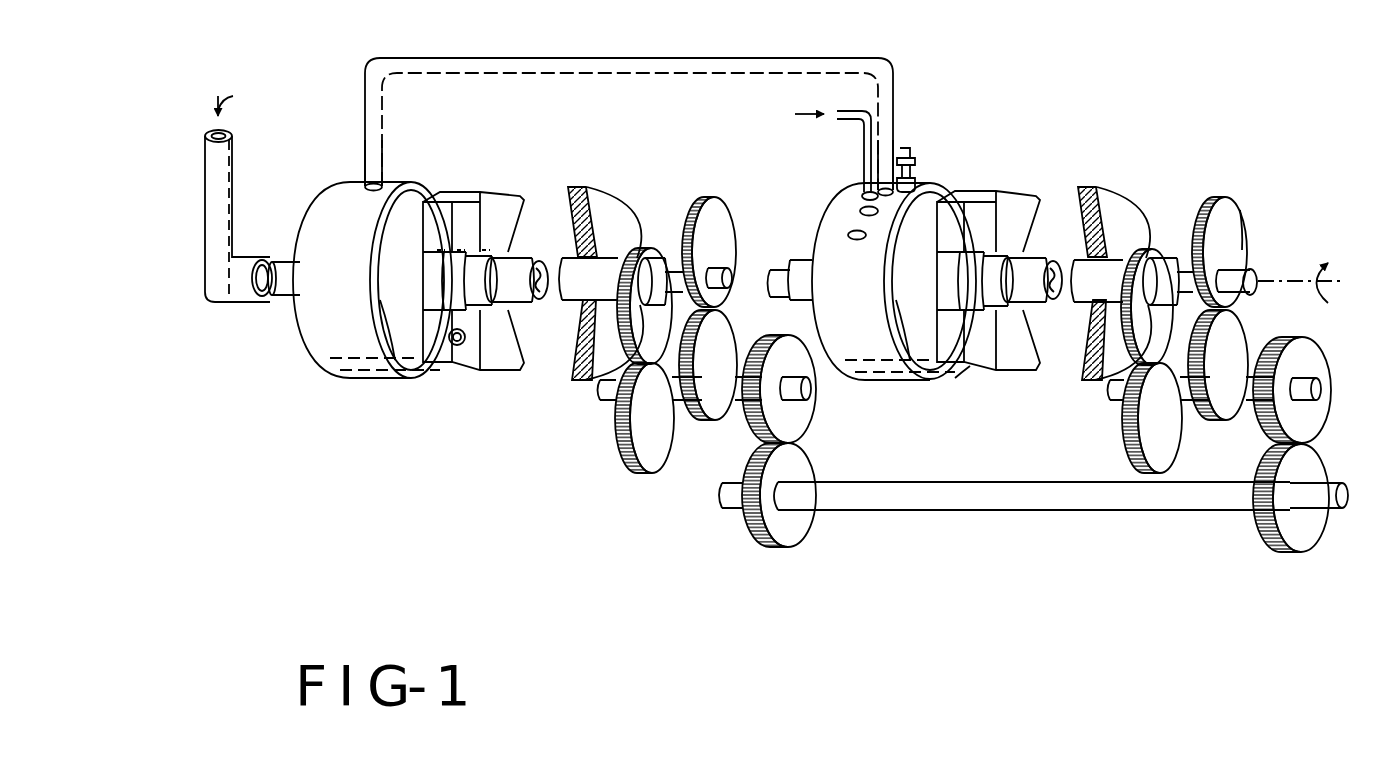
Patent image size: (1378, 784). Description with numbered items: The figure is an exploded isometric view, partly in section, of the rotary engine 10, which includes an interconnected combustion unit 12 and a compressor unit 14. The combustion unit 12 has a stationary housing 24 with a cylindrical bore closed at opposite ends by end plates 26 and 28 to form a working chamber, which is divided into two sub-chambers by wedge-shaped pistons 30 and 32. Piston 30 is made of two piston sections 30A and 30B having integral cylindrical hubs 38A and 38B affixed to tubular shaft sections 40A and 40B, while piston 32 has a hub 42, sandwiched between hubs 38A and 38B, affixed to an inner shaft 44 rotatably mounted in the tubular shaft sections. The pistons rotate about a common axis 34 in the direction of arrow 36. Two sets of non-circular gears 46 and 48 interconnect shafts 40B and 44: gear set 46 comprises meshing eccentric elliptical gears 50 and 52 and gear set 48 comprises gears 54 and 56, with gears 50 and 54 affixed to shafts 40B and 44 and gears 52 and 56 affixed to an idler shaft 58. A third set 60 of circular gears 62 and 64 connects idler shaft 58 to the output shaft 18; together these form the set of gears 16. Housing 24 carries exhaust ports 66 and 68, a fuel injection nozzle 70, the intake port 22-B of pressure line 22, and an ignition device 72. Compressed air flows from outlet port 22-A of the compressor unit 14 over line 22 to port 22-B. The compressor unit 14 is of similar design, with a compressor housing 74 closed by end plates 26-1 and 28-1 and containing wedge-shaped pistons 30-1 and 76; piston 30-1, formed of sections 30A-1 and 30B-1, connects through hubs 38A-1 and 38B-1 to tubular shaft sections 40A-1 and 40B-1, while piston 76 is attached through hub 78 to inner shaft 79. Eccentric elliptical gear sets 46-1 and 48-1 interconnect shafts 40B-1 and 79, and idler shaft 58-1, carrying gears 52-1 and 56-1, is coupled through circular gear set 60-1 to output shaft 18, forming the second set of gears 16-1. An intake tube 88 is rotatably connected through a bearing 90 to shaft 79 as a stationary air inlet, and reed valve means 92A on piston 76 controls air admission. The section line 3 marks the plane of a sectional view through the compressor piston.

The engine 10 is at (743, 44).
The combustion unit 12 is at (1036, 74).
The compressor unit 14 is at (293, 72).
The set of gears 16 is at (1245, 120).
The set of gears 16-1 is at (676, 520).
The output shaft 18 is at (985, 512).
The pressure line 22 is at (590, 58).
The outlet port 22-A is at (372, 180).
The intake port 22-B is at (885, 186).
The housing 24 is at (848, 382).
The end plate 26 is at (903, 340).
The end plate 26-1 is at (388, 322).
The end plate 28 is at (1080, 362).
The end plate 28-1 is at (598, 190).
The piston 30 is at (993, 180).
The piston 30-1 is at (488, 188).
The piston section 30A is at (990, 190).
The piston section 30A-1 is at (440, 190).
The piston section 30B is at (1025, 198).
The piston section 30B-1 is at (500, 200).
The piston 32 is at (975, 370).
The common axis 34 is at (1272, 284).
The arrow 36 is at (1326, 303).
The cylindrical hub 38A is at (940, 276).
The cylindrical hub 38A-1 is at (425, 264).
The cylindrical hub 38B is at (986, 298).
The cylindrical hub 38B-1 is at (472, 294).
The tubular shaft section 40A is at (800, 266).
The tubular shaft section 40A-1 is at (285, 296).
The tubular shaft section 40B is at (1088, 270).
The tubular shaft section 40B-1 is at (524, 300).
The cylindrical hub 42 is at (961, 288).
The inner shaft 44 is at (1252, 280).
The gear set 46 is at (1152, 246).
The gear set 46-1 is at (642, 246).
The gear set 48 is at (1216, 195).
The gear set 48-1 is at (708, 195).
The eccentric elliptical gear 50 is at (1160, 262).
The eccentric elliptical gear 52 is at (1125, 450).
The gear 52-1 is at (640, 472).
The eccentric elliptical gear 54 is at (1236, 215).
The eccentric elliptical gear 56 is at (1224, 424).
The gear 56-1 is at (692, 424).
The idler shaft 58 is at (1312, 390).
The idler shaft 58-1 is at (602, 385).
The gear set 60 is at (1282, 550).
The circular gear set 60-1 is at (762, 548).
The circular gear 62 is at (1318, 436).
The circular gear 64 is at (1316, 546).
The exhaust port 66 is at (848, 236).
The exhaust port 68 is at (860, 212).
The fuel injection nozzle 70 is at (860, 200).
The ignition device 72 is at (904, 160).
The compressor housing 74 is at (334, 212).
The piston 76 is at (462, 376).
The cylindrical hub 78 is at (447, 284).
The inner shaft 79 is at (292, 262).
The intake tube 88 is at (232, 172).
The bearing 90 is at (262, 258).
The reed valve means 92A is at (450, 342).
The section line 3- 3 is at (450, 178).